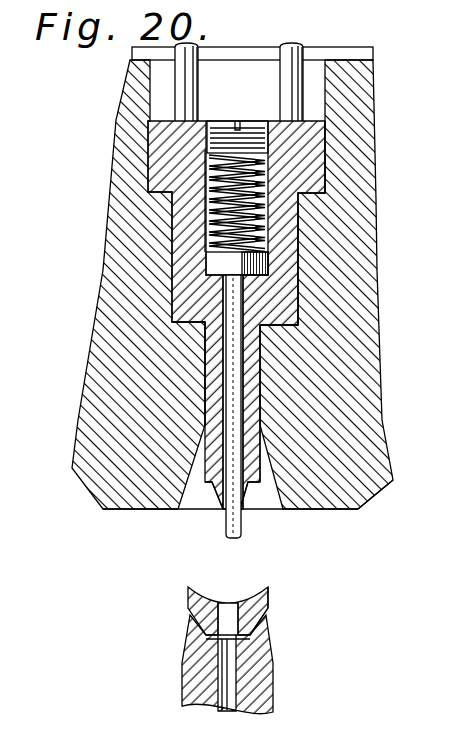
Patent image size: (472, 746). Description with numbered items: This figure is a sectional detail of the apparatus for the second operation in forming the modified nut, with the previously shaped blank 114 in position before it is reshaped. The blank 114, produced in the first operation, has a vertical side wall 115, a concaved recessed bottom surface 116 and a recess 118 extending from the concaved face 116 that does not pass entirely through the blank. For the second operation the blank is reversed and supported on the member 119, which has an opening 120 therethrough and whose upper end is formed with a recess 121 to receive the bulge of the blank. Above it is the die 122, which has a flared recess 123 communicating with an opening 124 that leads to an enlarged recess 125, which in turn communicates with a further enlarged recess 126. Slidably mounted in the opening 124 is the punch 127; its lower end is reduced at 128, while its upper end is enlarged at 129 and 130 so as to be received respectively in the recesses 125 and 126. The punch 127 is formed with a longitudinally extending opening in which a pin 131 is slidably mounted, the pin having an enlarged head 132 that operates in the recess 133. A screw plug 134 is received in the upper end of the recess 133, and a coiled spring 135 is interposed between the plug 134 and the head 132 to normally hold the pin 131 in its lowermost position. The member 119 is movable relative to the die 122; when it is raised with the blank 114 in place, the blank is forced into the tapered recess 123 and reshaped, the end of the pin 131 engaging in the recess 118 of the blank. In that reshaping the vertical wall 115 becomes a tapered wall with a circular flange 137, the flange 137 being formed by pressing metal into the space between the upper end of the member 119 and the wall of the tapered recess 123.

The shaped blank 114 is at (258, 609).
The vertical side wall 115 is at (268, 593).
The concaved recessed bottom surface 116 is at (238, 592).
The recess 118 is at (227, 613).
The member 119 is at (273, 672).
The opening 120 is at (228, 688).
The recess 121 is at (250, 637).
The die 122 is at (363, 348).
The flared recess 123 is at (195, 493).
The opening 124 is at (262, 395).
The enlarged recess 125 is at (298, 261).
The further enlarged recess 126 is at (318, 95).
The punch 127 is at (208, 376).
The reduced lower end 128 is at (218, 513).
The enlarged upper end portion 129 is at (298, 226).
The enlarged upper end portion 130 is at (315, 160).
The pin 131 is at (237, 452).
The enlarged head 132 is at (268, 257).
The recess 133 is at (268, 186).
The screw plug 134 is at (248, 130).
The coiled spring 135 is at (205, 208).
The circular flange 137 is at (394, 480).